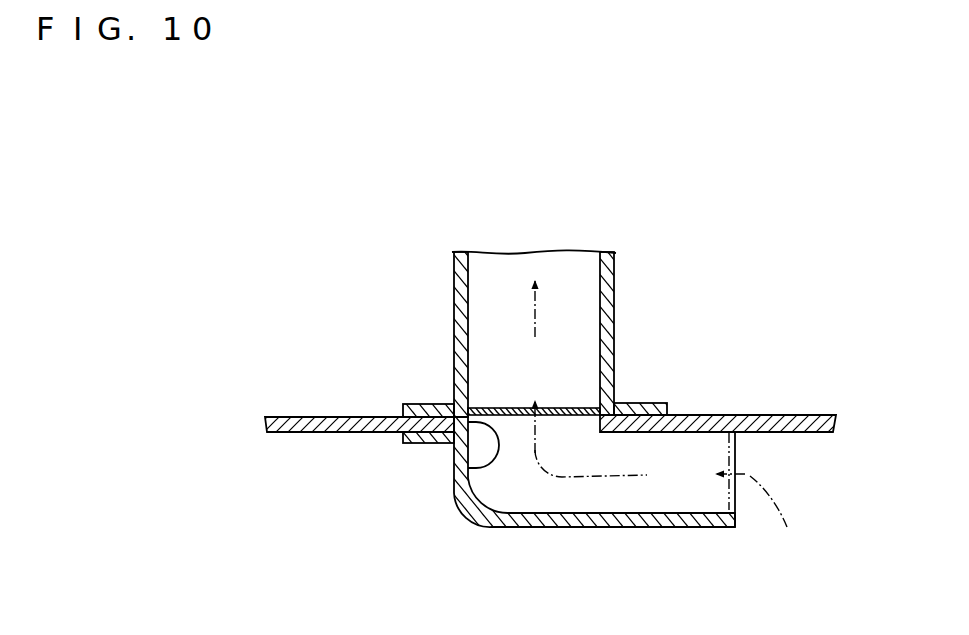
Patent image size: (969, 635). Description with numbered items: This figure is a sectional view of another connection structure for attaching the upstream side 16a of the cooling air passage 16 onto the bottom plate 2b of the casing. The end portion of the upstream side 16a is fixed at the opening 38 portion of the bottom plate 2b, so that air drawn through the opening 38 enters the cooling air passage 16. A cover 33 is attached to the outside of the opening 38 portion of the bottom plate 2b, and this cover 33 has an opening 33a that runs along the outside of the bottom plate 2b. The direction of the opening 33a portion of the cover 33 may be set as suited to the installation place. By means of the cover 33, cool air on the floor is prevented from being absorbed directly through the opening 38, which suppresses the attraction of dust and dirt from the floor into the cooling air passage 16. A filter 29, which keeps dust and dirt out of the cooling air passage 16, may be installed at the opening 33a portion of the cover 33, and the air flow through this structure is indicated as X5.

The cooling air passage 16 is at (583, 277).
The upstream side of the cooling air passage 16a is at (462, 372).
The bottom plate 2b is at (815, 421).
The filter 29 is at (563, 406).
The opening 38 is at (474, 467).
The cover 33 is at (555, 531).
The opening of the cover 33a is at (737, 509).
The air flow path X5 is at (607, 484).